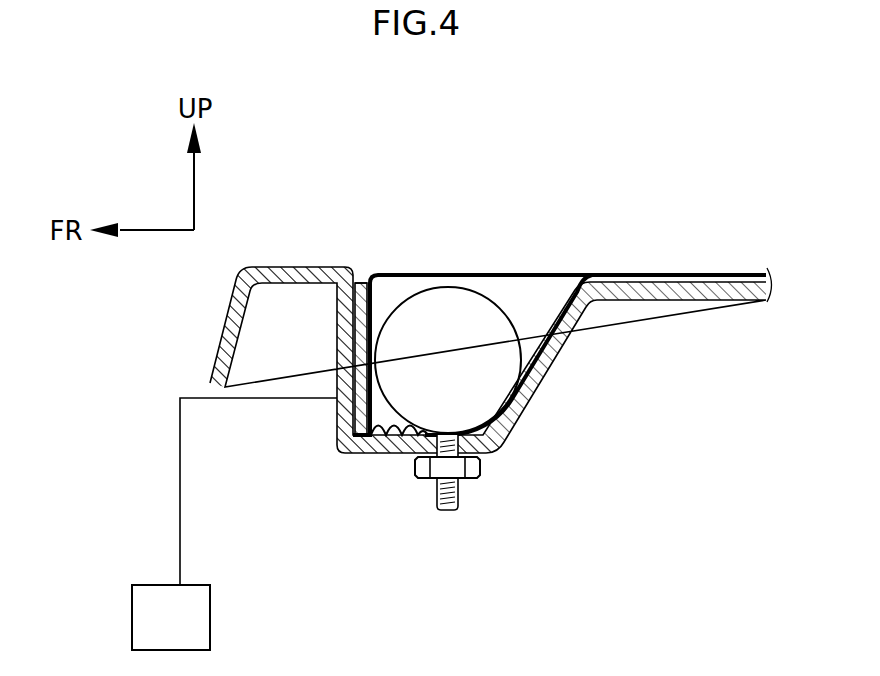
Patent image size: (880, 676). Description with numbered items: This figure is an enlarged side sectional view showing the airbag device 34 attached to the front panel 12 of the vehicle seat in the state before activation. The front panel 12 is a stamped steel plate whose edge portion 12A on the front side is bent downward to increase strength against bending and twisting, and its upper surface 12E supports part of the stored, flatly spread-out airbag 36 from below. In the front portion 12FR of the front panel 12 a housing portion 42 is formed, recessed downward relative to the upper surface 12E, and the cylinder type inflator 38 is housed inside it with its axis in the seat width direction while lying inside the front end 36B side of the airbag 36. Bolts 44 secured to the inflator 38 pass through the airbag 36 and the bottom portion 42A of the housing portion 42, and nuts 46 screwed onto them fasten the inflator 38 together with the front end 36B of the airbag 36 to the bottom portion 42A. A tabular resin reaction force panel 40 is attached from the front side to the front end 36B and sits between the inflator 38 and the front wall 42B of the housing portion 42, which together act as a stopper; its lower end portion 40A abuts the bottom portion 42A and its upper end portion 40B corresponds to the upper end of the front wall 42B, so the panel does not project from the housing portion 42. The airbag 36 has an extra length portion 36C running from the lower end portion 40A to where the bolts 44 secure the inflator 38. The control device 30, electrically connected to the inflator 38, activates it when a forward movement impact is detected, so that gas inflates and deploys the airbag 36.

The front panel 12 is at (254, 264).
The front portion of the front panel 12FR is at (331, 265).
The edge portion on the front side of the front panel 12A is at (208, 382).
The upper surface of the front panel 12E is at (718, 290).
The control device 30 is at (198, 615).
The airbag device 34 is at (590, 250).
The airbag 36 is at (538, 273).
The front end of the airbag 36B is at (352, 303).
The extra length portion 36C is at (395, 440).
The inflator 38 is at (480, 313).
The reaction force panel 40 is at (362, 350).
The lower end portion of the reaction force panel 40A is at (358, 436).
The upper end portion of the reaction force panel 40B is at (362, 281).
The housing portion 42 is at (545, 338).
The bottom portion of the housing portion 42A is at (383, 455).
The front wall of the housing portion 42B is at (337, 410).
The bolts 44 is at (458, 497).
The nuts 46 is at (482, 468).